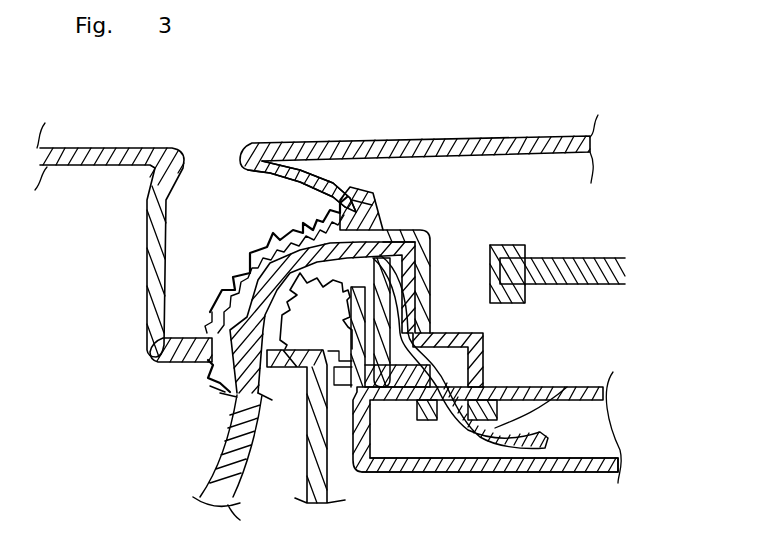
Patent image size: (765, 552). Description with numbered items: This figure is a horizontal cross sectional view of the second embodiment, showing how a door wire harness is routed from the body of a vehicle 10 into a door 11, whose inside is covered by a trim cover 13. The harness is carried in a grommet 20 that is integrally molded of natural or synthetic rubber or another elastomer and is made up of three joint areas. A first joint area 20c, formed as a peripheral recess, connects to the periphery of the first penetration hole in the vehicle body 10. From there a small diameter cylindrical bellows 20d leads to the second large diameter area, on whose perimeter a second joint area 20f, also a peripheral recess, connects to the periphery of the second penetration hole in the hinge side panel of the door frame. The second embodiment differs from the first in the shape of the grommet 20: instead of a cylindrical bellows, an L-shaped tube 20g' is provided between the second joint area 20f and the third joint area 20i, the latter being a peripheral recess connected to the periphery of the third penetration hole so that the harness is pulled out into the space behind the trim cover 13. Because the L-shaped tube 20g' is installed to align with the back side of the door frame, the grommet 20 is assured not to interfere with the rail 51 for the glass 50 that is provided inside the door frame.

The body of a vehicle 10 is at (108, 141).
The door 11 is at (486, 134).
The trim cover 13 is at (553, 473).
The grommet 20 is at (265, 216).
The first joint area 20c is at (160, 352).
The cylindrical bellows 20d is at (252, 270).
The second joint area 20f is at (345, 186).
The L-shaped tube 20g' is at (397, 325).
The third joint area 20i is at (432, 420).
The glass 50 is at (577, 247).
The rail 51 is at (523, 302).